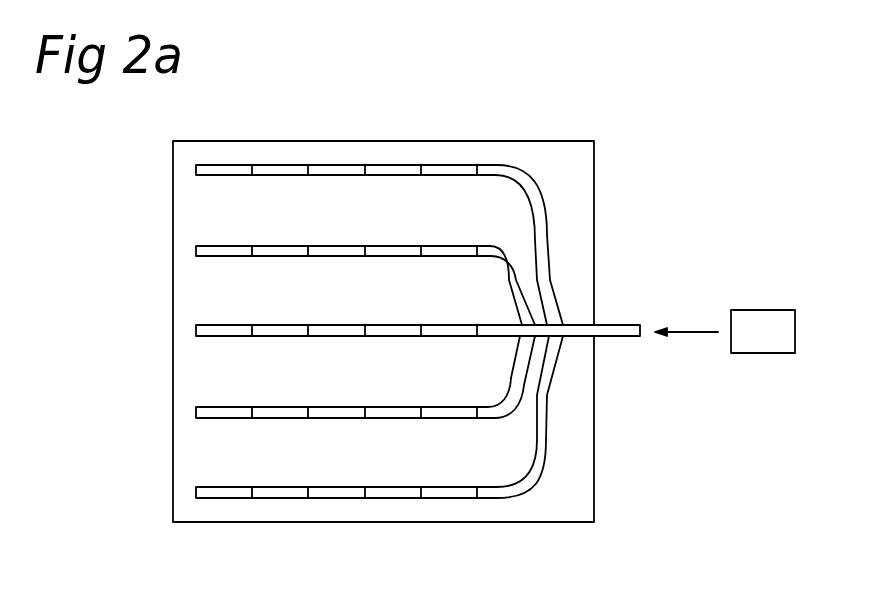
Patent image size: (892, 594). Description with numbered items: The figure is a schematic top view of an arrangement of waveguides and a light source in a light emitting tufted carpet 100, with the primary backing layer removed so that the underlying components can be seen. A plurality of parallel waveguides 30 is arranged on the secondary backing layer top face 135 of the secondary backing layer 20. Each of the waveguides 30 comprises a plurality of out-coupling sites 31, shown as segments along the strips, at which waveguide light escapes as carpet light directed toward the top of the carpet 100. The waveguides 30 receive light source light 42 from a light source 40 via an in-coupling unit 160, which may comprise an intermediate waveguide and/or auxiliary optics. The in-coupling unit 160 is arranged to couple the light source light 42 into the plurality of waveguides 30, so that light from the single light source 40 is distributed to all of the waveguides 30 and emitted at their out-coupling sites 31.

The light emitting tufted carpet 100 is at (607, 154).
The secondary backing layer 20 is at (226, 208).
The secondary backing layer top face 135 is at (227, 286).
The waveguide 30 is at (395, 168).
The waveguide light out-coupling site 31 is at (308, 168).
The in-coupling unit 160 is at (627, 328).
The light source light 42 is at (687, 332).
The light source 40 is at (750, 337).